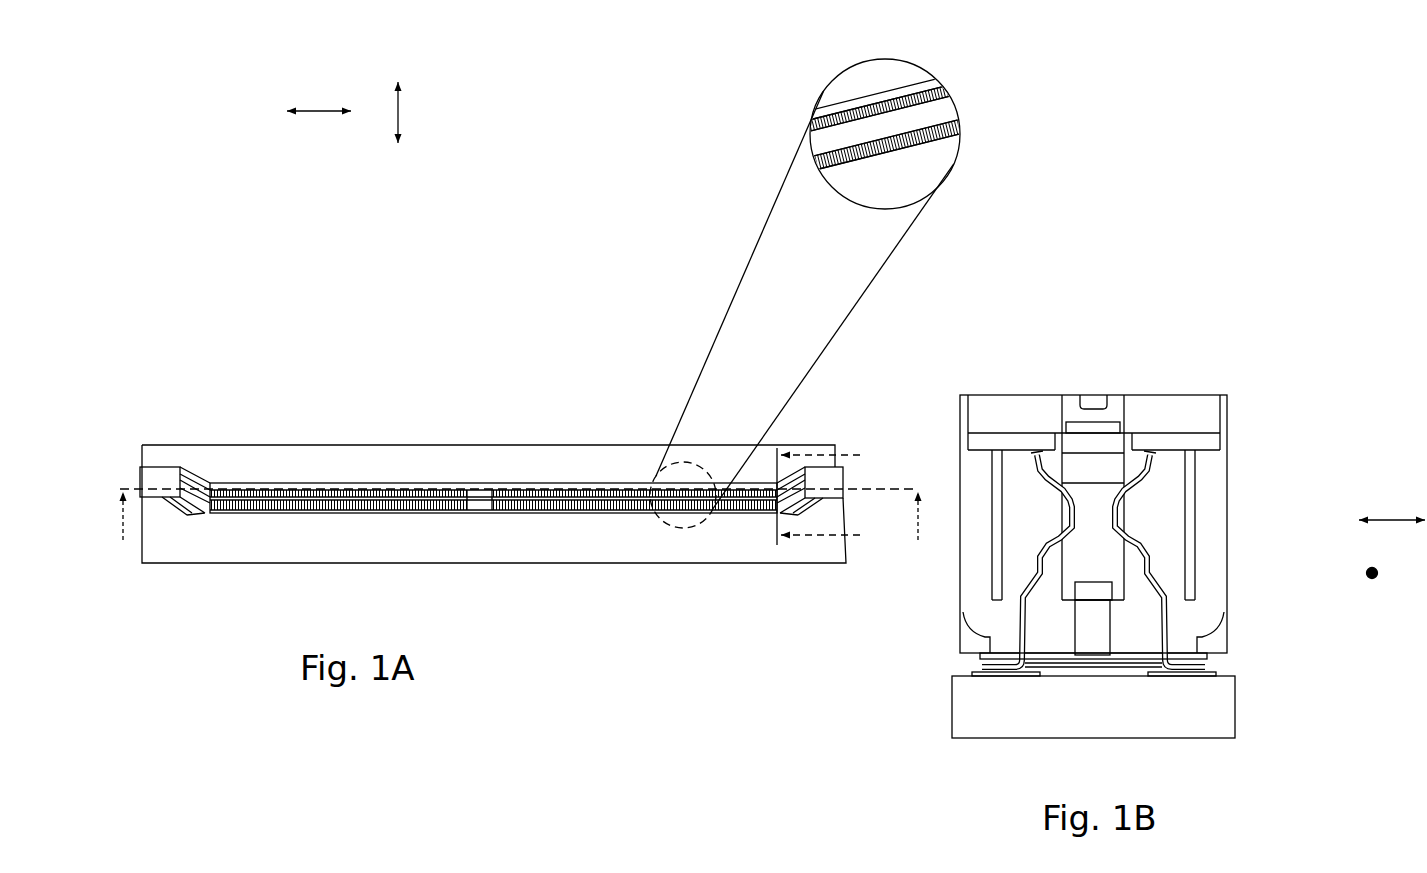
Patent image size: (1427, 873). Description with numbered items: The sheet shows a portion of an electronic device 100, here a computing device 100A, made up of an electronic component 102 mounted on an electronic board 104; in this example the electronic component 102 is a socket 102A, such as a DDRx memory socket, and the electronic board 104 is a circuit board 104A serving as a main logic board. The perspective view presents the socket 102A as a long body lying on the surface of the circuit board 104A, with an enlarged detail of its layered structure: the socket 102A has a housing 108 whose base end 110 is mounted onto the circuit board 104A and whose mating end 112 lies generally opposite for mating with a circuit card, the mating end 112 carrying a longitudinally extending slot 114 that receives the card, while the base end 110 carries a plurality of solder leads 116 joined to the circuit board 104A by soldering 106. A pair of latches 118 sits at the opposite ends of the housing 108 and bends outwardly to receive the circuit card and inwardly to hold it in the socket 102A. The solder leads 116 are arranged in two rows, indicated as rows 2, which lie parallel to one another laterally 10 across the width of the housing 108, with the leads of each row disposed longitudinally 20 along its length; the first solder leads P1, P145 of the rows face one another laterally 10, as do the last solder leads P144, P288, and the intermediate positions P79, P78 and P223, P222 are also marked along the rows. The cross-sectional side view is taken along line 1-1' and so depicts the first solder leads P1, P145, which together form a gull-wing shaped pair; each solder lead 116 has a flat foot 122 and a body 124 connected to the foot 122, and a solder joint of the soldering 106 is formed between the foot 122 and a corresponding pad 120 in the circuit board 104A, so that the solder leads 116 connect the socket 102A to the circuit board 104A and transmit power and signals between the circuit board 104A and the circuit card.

In FIG. 1A, the electronic device 100 is at (625, 340).
In FIG. 1B, the computing device 100A is at (1060, 545).
In FIG. 1A, the electronic component 102 is at (654, 266).
In FIG. 1B, the socket 102A is at (1017, 488).
In FIG. 1A, the electronic board 104 is at (636, 568).
In FIG. 1B, the circuit board 104A is at (1130, 731).
In FIG. 1B, the soldering 106 is at (1010, 672).
In FIG. 1A, the housing 108 is at (818, 123).
In FIG. 1A, the base end 110 is at (840, 137).
In FIG. 1A, the mating end 112 is at (920, 117).
In FIG. 1A, the slot 114 is at (873, 108).
In FIG. 1B, the slot 114 is at (1093, 392).
In FIG. 1A, the solder leads 116 is at (930, 150).
In FIG. 1B, the solder leads 116 is at (1147, 557).
In FIG. 1A, the latches 118 is at (150, 470).
In FIG. 1B, the pad 120 is at (952, 710).
In FIG. 1B, the foot 122 is at (1002, 683).
In FIG. 1B, the body 124 is at (1163, 630).
In FIG. 1A, the lateral direction 10 is at (400, 110).
In FIG. 1B, the lateral direction 10 is at (1390, 515).
In FIG. 1A, the longitudinal direction 20 is at (315, 110).
In FIG. 1B, the longitudinal direction 20 is at (1375, 582).
In FIG. 1A, the section line 1-1' 1 is at (832, 497).
In FIG. 1A, the rows of solder leads 2 is at (524, 535).
In FIG. 1A, the first solder lead P1 is at (776, 481).
In FIG. 1B, the first solder lead P1 is at (1020, 618).
In FIG. 1A, the first solder lead P145 is at (776, 515).
In FIG. 1B, the first solder lead P145 is at (1170, 620).
In FIG. 1A, the last solder lead P144 is at (209, 481).
In FIG. 1A, the last solder lead P288 is at (209, 515).
In FIG. 1A, the point P79 is at (462, 482).
In FIG. 1A, the point P78 is at (493, 482).
In FIG. 1A, the point P223 is at (463, 515).
In FIG. 1A, the point P222 is at (493, 515).